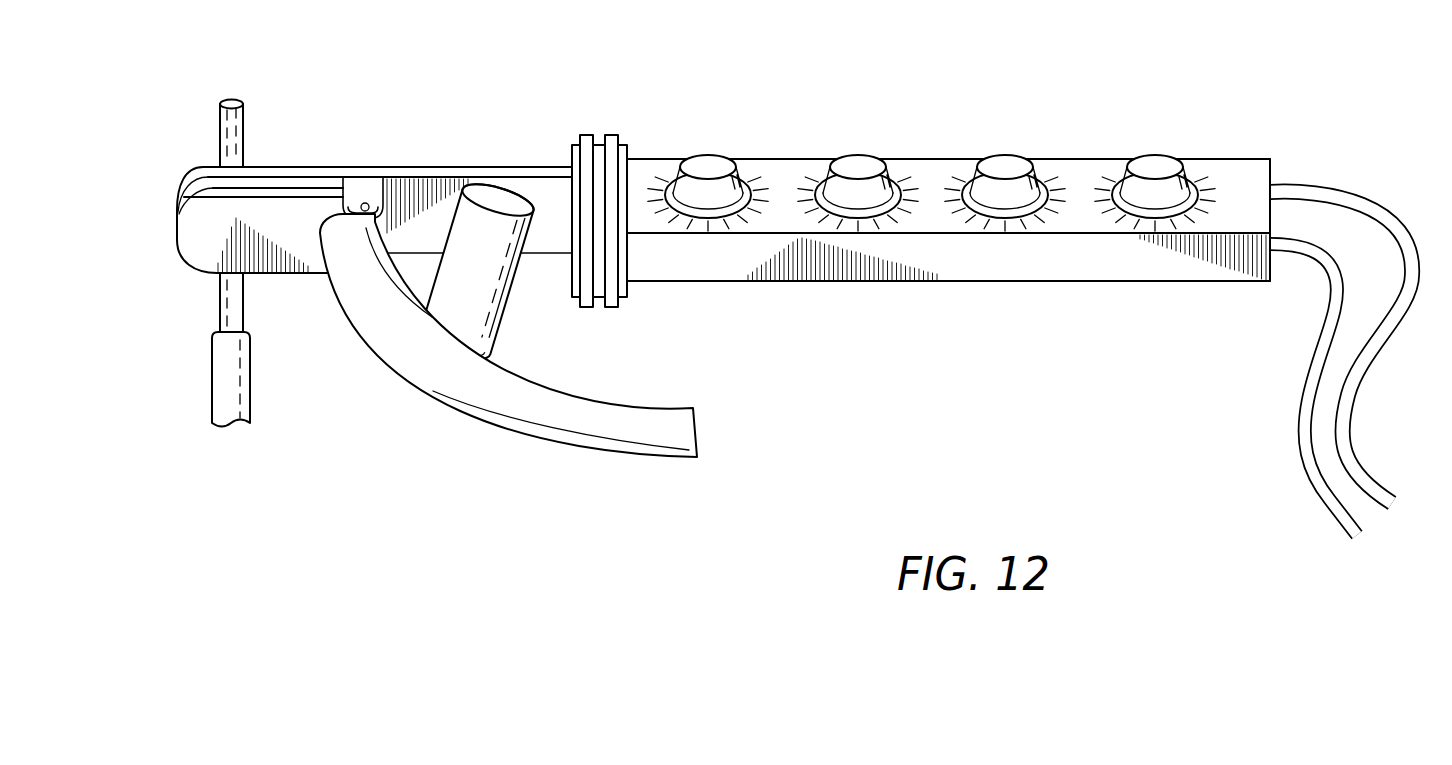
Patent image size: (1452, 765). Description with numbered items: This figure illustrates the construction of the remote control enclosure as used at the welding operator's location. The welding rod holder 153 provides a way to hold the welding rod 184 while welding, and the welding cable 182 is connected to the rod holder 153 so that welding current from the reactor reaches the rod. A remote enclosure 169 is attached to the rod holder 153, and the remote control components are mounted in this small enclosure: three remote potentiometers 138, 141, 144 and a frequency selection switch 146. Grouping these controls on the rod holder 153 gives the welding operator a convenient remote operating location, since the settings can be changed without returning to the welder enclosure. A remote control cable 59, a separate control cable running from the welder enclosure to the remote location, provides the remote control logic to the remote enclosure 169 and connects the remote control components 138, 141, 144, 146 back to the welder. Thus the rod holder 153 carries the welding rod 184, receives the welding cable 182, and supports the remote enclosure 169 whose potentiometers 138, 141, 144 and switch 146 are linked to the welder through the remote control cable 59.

The welding rod holder 153 is at (413, 166).
The remote potentiometer 138 is at (697, 156).
The remote potentiometer 141 is at (848, 156).
The remote potentiometer 144 is at (998, 156).
The frequency selection switch 146 is at (1148, 156).
The remote enclosure 169 is at (1097, 284).
The welding cable 182 is at (1398, 217).
The remote control cable 59 is at (1325, 500).
The welding rod 184 is at (252, 407).